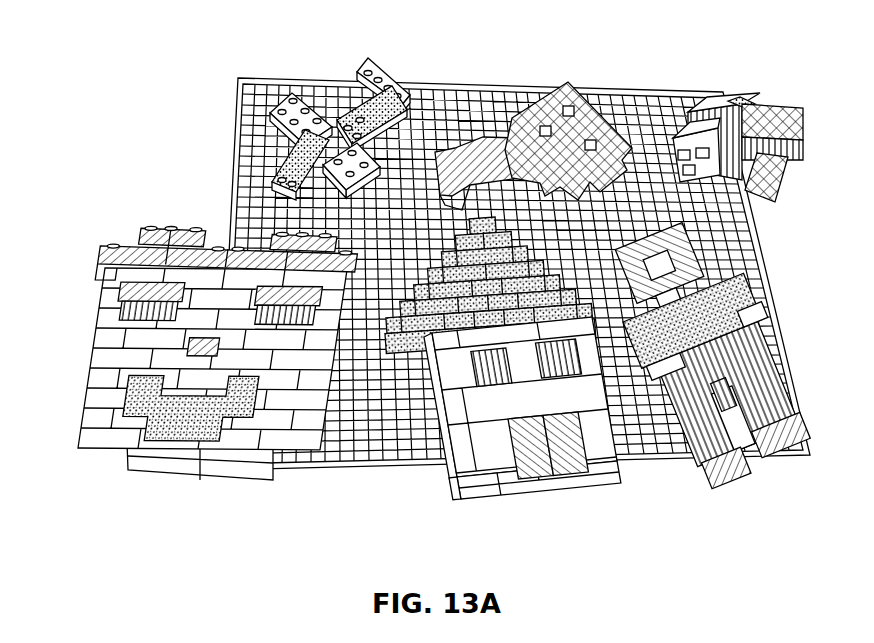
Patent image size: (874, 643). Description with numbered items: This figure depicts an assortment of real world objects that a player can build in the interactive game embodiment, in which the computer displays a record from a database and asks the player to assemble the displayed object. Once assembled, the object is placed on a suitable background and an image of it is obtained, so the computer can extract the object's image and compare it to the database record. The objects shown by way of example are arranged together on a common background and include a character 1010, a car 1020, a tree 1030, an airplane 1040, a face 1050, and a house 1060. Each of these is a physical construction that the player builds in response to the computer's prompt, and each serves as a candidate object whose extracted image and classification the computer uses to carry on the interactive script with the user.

The character 1010 is at (753, 300).
The car 1020 is at (800, 168).
The tree 1030 is at (557, 95).
The airplane 1040 is at (330, 130).
The face 1050 is at (105, 378).
The house 1060 is at (585, 445).